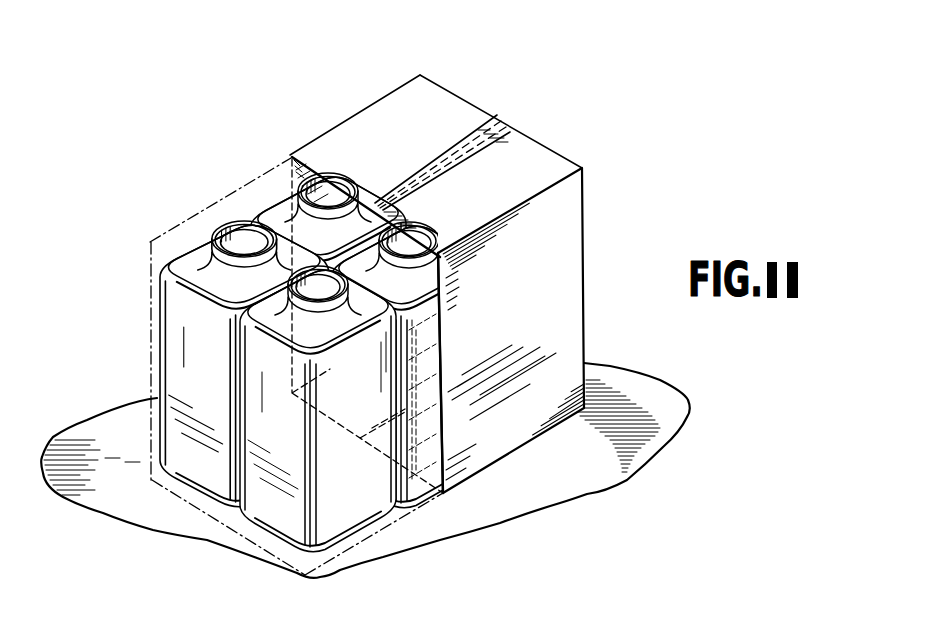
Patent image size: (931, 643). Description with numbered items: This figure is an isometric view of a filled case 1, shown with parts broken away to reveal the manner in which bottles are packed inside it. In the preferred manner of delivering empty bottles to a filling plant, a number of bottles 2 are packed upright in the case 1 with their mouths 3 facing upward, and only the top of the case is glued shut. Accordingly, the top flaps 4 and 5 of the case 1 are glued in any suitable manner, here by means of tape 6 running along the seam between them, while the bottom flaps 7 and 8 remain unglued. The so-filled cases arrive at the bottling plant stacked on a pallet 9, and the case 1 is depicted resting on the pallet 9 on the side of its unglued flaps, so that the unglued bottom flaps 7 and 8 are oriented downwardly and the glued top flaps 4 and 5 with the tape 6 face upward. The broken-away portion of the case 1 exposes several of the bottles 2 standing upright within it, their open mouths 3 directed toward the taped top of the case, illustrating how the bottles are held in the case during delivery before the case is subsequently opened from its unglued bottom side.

The case 1 is at (452, 279).
The bottles 2 is at (184, 290).
The mouths 3 is at (344, 300).
The top flap 4 is at (458, 97).
The top flap 5 is at (547, 148).
The tape 6 is at (443, 142).
The bottom flap 7 is at (166, 493).
The bottom flap 8 is at (250, 537).
The pallet 9 is at (583, 497).